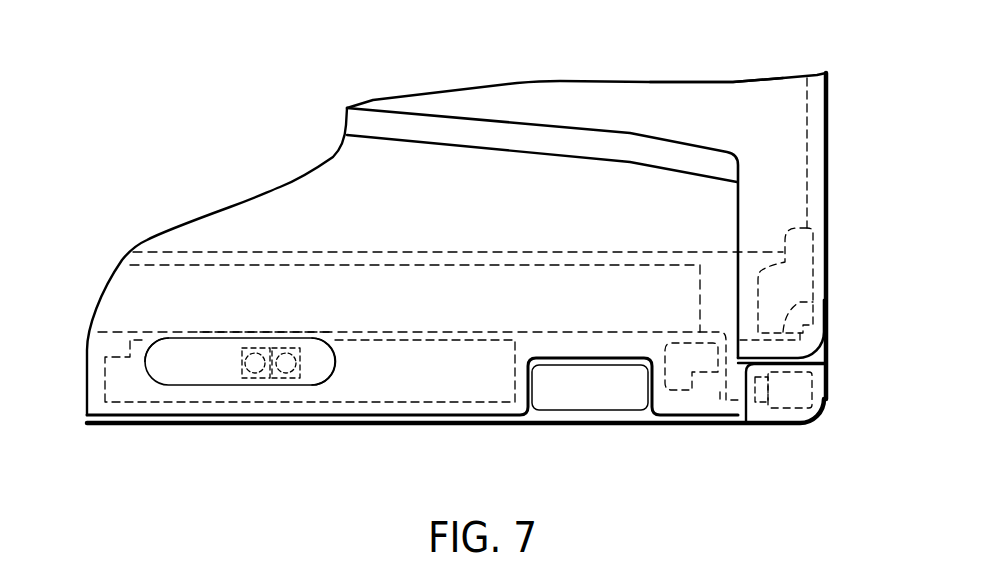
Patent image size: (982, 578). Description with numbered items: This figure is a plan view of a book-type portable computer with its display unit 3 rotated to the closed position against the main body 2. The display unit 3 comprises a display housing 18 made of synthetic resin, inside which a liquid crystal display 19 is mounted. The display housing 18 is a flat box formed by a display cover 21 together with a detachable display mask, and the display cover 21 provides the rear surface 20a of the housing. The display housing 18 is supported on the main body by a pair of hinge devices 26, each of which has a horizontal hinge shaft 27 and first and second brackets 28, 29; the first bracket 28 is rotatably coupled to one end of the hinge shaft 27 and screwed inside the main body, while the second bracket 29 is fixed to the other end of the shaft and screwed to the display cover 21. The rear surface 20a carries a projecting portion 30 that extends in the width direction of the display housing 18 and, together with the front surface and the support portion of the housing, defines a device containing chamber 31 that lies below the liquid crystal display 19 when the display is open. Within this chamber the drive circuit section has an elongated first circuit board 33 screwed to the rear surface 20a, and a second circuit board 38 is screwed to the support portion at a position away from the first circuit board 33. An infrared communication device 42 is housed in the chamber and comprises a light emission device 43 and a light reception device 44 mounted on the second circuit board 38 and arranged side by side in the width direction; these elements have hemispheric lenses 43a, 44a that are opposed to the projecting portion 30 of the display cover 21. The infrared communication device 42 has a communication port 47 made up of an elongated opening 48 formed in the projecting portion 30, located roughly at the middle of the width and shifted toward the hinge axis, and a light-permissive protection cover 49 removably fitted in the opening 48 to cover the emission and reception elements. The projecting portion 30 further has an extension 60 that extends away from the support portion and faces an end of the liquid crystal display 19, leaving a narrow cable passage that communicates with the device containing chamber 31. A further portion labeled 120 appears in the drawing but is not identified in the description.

The main body 2 is at (567, 430).
The display unit 3 is at (628, 105).
The display housing 18 is at (828, 165).
The liquid crystal display 19 is at (773, 103).
The rear surface 20a is at (532, 97).
The display cover 21 is at (715, 97).
The hinge device 26 is at (717, 385).
The hinge shaft 27 is at (752, 397).
The first bracket 28 is at (792, 400).
The second bracket 29 is at (813, 292).
The projecting portion 30 is at (446, 310).
The device containing chamber 31 is at (435, 258).
The first circuit board 33 is at (310, 277).
The second circuit board 38 is at (483, 392).
The infrared communication device 42 is at (262, 333).
The light emission device 43 is at (295, 380).
The hemispheric lens 43a is at (307, 352).
The light reception device 44 is at (260, 380).
The hemispheric lens 44a is at (240, 365).
The communication port 47 is at (318, 363).
The opening 48 is at (152, 352).
The protection cover 49 is at (175, 373).
The extension 60 is at (360, 152).
The corner portion 120 is at (820, 395).